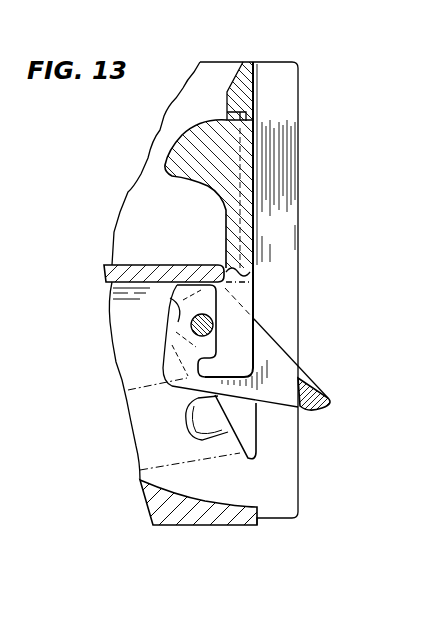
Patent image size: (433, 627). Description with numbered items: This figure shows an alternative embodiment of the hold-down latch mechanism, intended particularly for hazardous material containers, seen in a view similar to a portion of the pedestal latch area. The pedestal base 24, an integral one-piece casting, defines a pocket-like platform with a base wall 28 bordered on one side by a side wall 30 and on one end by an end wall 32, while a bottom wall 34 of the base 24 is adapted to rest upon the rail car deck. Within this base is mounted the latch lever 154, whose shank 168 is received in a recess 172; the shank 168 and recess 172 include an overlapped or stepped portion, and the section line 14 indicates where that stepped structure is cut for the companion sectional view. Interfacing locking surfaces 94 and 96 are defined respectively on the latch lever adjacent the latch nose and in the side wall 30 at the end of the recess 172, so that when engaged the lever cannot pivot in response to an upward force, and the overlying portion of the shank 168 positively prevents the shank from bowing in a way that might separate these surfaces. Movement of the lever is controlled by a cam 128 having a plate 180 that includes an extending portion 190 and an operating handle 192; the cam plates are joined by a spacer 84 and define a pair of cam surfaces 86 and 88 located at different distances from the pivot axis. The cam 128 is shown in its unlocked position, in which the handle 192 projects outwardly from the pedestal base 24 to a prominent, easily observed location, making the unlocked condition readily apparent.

The section line 14- 14 is at (218, 233).
The base 24 is at (112, 299).
The base wall 28 is at (130, 264).
The side wall 30 is at (252, 62).
The end wall 32 is at (288, 500).
The bottom wall 34 is at (217, 522).
The spacer 84 is at (166, 368).
The cam surface 86 is at (185, 265).
The cam surface 88 is at (172, 320).
The locking surface 94 is at (255, 123).
The locking surface 96 is at (228, 113).
The cam 128 is at (286, 345).
The latch lever 154 is at (254, 262).
The shank 168 is at (247, 204).
The recess 172 is at (230, 116).
The plate 180 is at (190, 334).
The extending portion 190 is at (283, 402).
The operating handle 192 is at (330, 400).